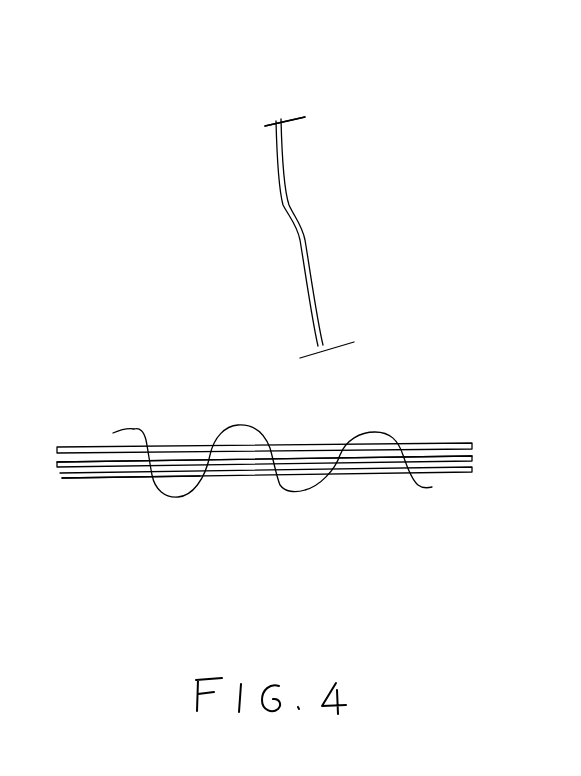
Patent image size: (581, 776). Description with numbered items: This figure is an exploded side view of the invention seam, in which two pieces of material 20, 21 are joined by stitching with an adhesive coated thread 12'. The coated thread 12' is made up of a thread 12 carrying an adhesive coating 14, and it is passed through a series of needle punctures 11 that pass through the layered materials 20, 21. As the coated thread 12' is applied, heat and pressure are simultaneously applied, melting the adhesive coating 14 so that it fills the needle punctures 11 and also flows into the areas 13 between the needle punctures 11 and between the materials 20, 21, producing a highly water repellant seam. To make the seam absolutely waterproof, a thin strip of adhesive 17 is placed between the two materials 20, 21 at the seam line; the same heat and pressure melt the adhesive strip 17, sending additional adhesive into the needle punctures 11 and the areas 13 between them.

The needle punctures 11 is at (150, 443).
The thread 12 is at (281, 237).
The adhesive coated thread 12' is at (238, 235).
The areas between puncture holes 13 is at (128, 465).
The adhesive coating 14 is at (290, 196).
The strip of adhesive 17 is at (78, 461).
The material 20 is at (443, 440).
The material 21 is at (458, 475).